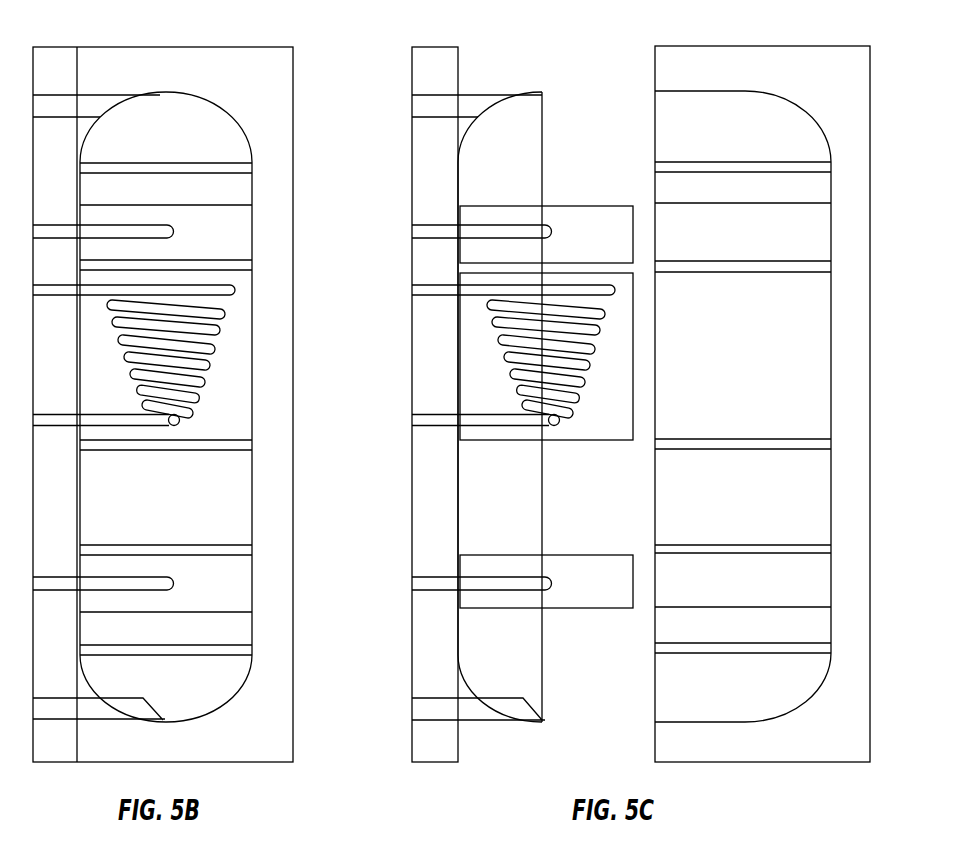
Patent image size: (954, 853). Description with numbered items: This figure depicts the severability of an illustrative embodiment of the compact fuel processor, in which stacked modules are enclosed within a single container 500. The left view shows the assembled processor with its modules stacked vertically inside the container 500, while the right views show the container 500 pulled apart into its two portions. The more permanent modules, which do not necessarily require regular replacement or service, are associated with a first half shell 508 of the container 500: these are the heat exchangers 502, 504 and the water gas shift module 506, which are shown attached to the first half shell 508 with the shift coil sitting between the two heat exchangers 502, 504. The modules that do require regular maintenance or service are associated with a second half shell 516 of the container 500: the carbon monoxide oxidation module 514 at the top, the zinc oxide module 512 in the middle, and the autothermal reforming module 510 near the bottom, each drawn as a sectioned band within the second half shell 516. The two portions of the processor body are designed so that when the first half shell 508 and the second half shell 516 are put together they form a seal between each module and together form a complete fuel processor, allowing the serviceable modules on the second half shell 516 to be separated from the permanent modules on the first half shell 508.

In FIG. 5B, the container 500 is at (293, 82).
In FIG. 5C, the first half shell 508 is at (412, 159).
In FIG. 5C, the heat exchanger 502 is at (566, 214).
In FIG. 5C, the water gas shift module 506 is at (577, 441).
In FIG. 5C, the heat exchanger 504 is at (577, 609).
In FIG. 5C, the second half shell 516 is at (820, 46).
In FIG. 5C, the carbon monoxide oxidation module 514 is at (718, 185).
In FIG. 5C, the zinc oxide module 512 is at (718, 462).
In FIG. 5C, the autothermal reforming module 510 is at (733, 614).